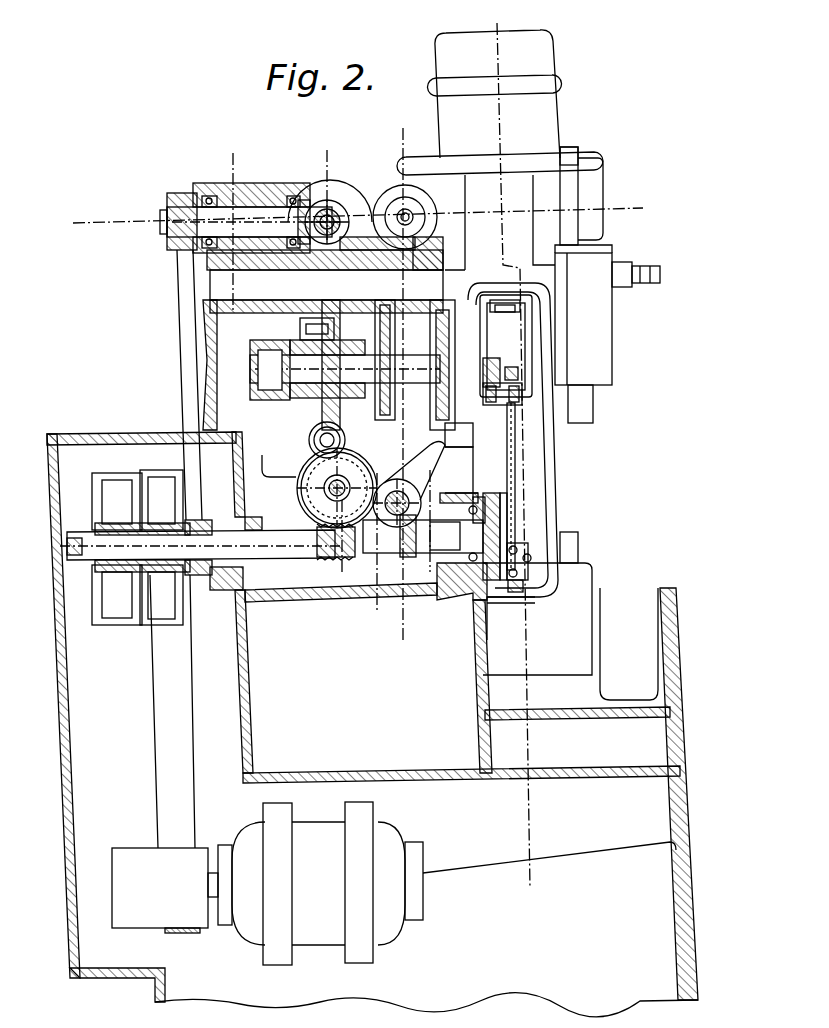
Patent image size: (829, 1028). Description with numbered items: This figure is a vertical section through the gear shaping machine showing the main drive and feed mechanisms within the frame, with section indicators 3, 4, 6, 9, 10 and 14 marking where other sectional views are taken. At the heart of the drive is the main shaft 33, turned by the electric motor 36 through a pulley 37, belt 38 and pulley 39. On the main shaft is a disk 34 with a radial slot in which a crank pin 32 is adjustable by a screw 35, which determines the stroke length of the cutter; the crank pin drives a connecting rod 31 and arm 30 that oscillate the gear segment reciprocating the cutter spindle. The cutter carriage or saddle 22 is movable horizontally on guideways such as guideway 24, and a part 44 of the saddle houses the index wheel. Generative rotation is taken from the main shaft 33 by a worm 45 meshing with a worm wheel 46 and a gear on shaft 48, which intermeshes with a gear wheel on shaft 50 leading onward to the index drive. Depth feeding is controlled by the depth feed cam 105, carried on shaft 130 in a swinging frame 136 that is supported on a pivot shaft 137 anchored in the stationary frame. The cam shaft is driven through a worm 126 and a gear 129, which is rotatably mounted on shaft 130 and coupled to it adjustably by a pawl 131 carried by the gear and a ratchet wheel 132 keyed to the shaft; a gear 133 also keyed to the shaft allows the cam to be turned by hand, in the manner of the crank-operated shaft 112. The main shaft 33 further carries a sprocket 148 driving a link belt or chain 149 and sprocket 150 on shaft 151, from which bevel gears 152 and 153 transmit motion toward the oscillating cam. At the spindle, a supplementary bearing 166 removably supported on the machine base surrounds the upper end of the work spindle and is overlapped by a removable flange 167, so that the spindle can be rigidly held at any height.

The section line 3- 3 is at (420, 572).
The section line 4- 4 is at (497, 23).
The section line 6- 6 is at (386, 640).
The section line 9- 9 is at (318, 572).
The section line 10- 10 is at (643, 222).
The section line 14- 14 is at (350, 613).
The cutter carriage or saddle 22 is at (575, 275).
The guideway 24 is at (459, 463).
The arm 30 is at (497, 402).
The connecting rod 31 is at (507, 467).
The crank pin 32 is at (525, 565).
The main shaft 33 is at (423, 533).
The disk 34 is at (490, 493).
The screw 35 is at (497, 604).
The electric motor 36 is at (447, 883).
The pulley 37 is at (190, 855).
The belt 38 is at (165, 768).
The pulley 39 is at (175, 625).
The part of the cutter saddle 44 is at (585, 205).
The worm 45 is at (340, 560).
The worm wheel 46 is at (306, 492).
The shaft 48 is at (330, 495).
The shaft 50 is at (390, 480).
The depth feed cam 105 is at (450, 360).
The shaft 112 is at (650, 276).
The worm 126 is at (345, 440).
The gear 129 is at (314, 440).
The shaft 130 is at (345, 370).
The pawl 131 is at (308, 350).
The ratchet wheel 132 is at (318, 398).
The gear 133 is at (392, 400).
The swinging frame 136 is at (270, 472).
The pivot shaft 137 is at (325, 275).
The sprocket 148 is at (196, 575).
The link belt or chain 149 is at (190, 355).
The sprocket 150 is at (175, 200).
The shaft 151 is at (258, 205).
The bevel gear 152 is at (328, 200).
The bevel gear 153 is at (373, 200).
The supplementary bearing 166 is at (578, 608).
The removable flange 167 is at (580, 540).